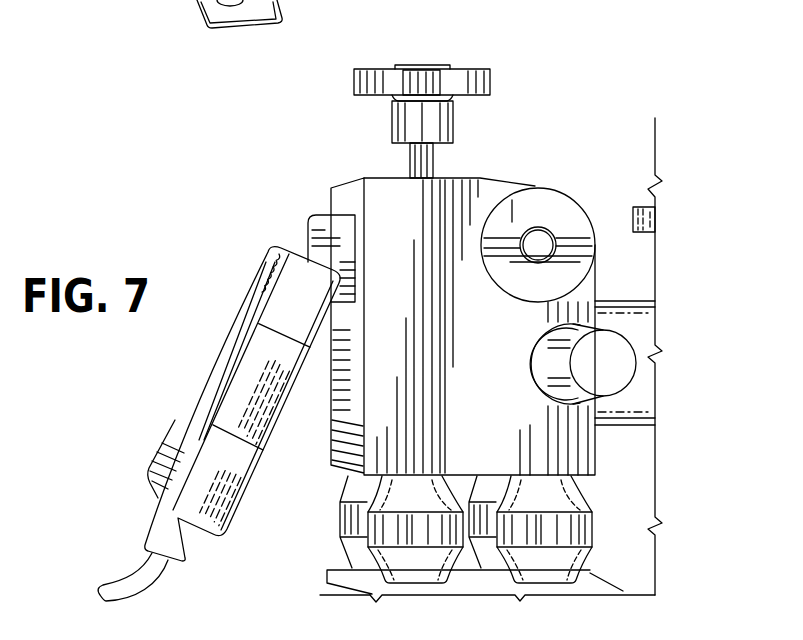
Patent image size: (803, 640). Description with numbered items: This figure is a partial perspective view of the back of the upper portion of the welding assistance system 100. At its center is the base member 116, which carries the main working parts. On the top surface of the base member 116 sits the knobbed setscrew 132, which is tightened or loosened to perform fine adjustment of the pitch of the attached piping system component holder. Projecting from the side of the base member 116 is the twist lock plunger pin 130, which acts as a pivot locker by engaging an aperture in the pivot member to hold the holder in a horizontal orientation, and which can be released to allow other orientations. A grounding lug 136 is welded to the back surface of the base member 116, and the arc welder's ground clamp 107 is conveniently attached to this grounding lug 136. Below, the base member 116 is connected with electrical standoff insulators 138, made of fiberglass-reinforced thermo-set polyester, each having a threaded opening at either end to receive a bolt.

The welding assistance system 100 is at (563, 131).
The ground clamp 107 is at (190, 403).
The base member 116 is at (376, 190).
The twist lock plunger pin 130 is at (620, 348).
The knobbed setscrew 132 is at (457, 68).
The grounding lug 136 is at (310, 232).
The electrical standoff insulators 138 is at (563, 528).